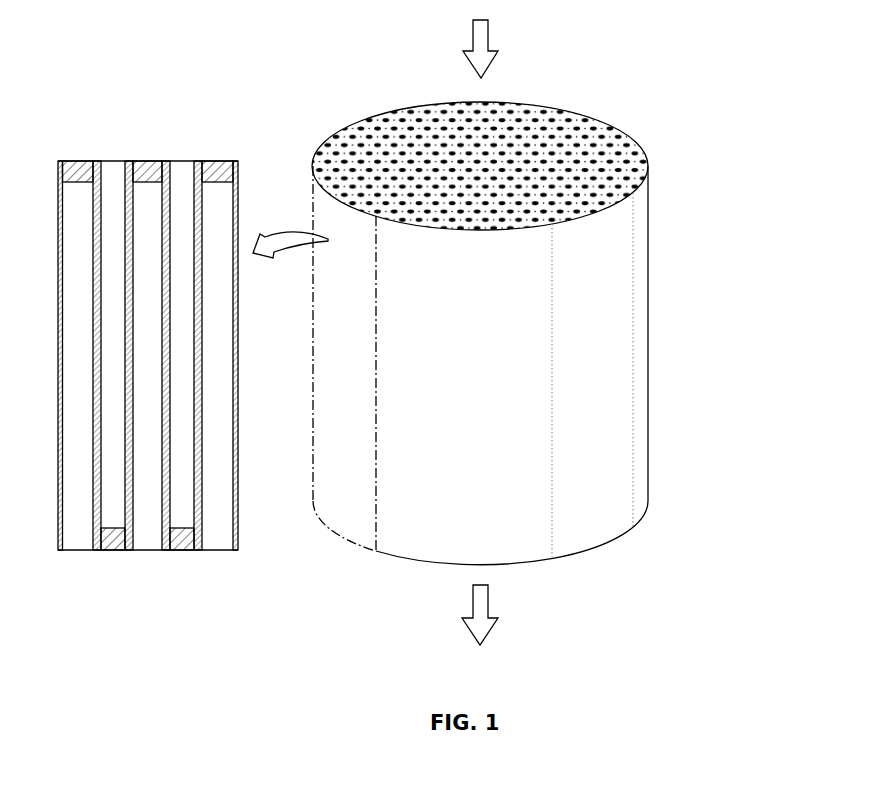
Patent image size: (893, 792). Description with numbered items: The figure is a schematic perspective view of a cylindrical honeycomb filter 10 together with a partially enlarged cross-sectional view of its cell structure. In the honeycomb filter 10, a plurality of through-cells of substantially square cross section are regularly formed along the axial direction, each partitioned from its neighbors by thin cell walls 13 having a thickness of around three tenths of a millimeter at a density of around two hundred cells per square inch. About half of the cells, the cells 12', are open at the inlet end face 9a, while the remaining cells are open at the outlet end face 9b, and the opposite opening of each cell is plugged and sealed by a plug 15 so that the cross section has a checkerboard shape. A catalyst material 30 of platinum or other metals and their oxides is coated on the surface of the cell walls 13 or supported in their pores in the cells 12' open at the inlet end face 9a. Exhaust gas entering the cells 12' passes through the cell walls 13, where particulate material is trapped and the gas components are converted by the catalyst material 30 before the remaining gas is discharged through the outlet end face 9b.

The inlet end face 9a is at (554, 90).
The outlet end face 9b is at (535, 590).
The honeycomb filter 10 is at (664, 272).
The through-cells open at the inlet end face 12' is at (135, 326).
The cell wall 13 is at (60, 161).
The plugging portion 15 is at (212, 171).
The catalyst material 30 is at (168, 377).